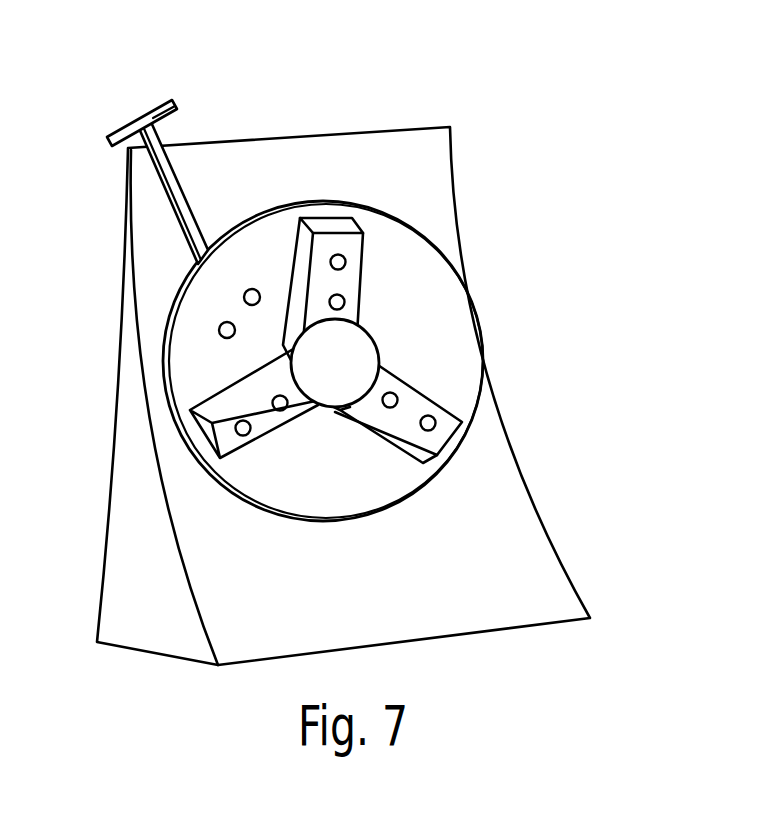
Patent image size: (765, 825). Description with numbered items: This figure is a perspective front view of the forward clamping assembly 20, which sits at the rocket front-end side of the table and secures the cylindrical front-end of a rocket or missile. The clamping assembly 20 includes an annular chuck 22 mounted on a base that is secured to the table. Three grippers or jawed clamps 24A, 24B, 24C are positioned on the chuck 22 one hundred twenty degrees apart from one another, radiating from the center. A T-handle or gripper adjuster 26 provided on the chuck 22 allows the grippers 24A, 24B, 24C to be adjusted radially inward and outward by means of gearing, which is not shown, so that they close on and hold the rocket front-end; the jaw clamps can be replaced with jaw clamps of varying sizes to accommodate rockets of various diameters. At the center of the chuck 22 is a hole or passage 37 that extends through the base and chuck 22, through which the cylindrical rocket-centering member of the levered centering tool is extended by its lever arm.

The forward clamping assembly 20 is at (327, 115).
The annular chuck 22 is at (447, 295).
The jawed clamp 24A is at (355, 250).
The jawed clamp 24B is at (425, 402).
The jawed clamp 24C is at (215, 413).
The T-handle gripper adjuster 26 is at (131, 128).
The hole or passage 37 is at (333, 383).